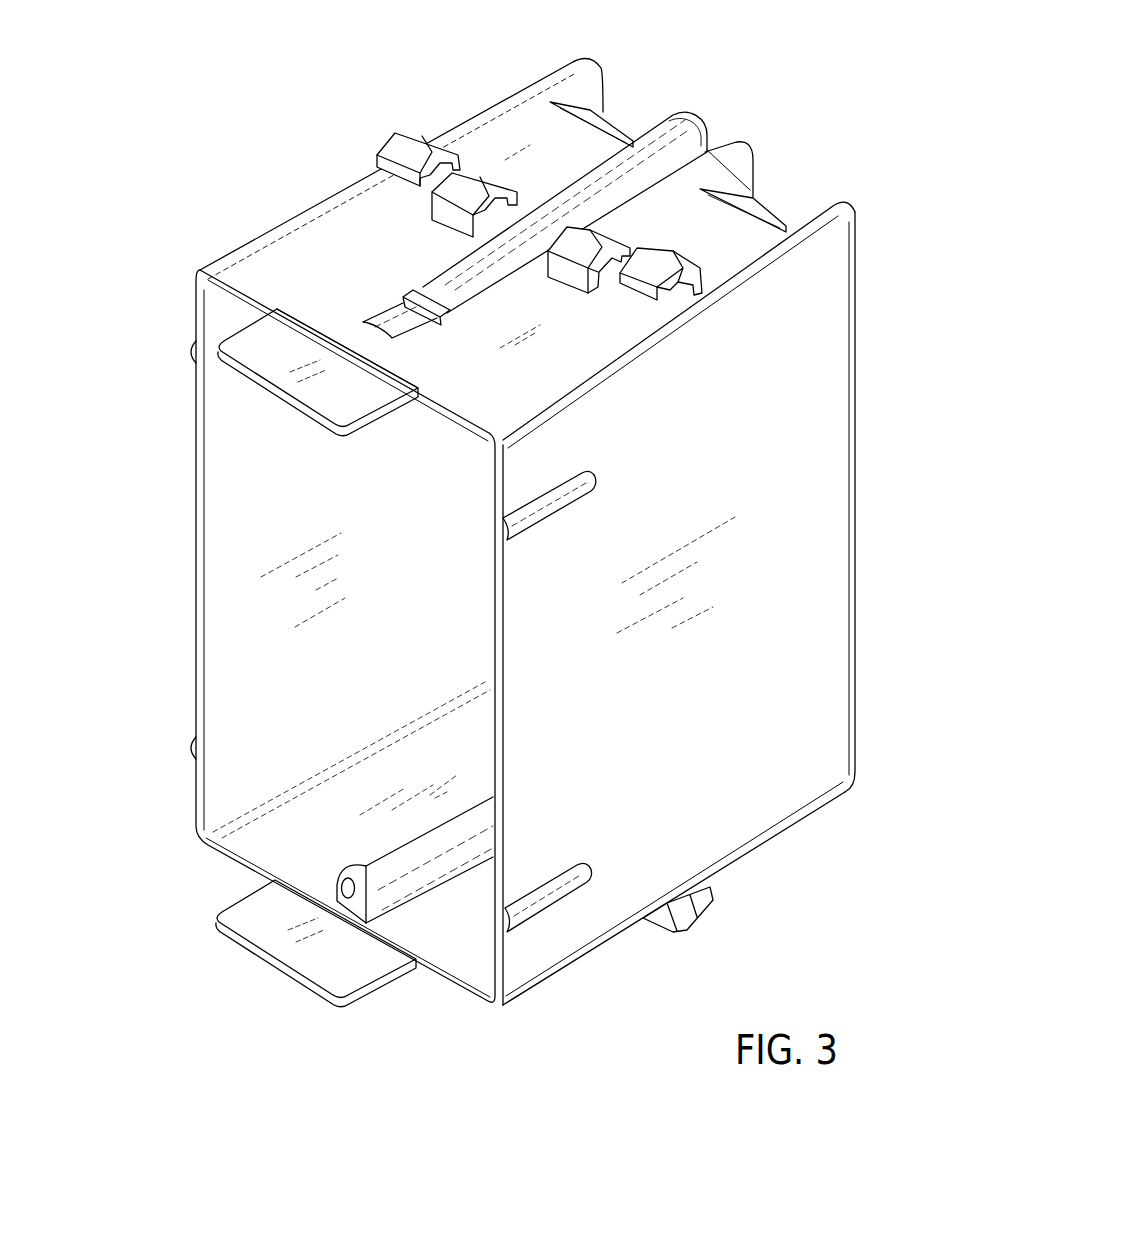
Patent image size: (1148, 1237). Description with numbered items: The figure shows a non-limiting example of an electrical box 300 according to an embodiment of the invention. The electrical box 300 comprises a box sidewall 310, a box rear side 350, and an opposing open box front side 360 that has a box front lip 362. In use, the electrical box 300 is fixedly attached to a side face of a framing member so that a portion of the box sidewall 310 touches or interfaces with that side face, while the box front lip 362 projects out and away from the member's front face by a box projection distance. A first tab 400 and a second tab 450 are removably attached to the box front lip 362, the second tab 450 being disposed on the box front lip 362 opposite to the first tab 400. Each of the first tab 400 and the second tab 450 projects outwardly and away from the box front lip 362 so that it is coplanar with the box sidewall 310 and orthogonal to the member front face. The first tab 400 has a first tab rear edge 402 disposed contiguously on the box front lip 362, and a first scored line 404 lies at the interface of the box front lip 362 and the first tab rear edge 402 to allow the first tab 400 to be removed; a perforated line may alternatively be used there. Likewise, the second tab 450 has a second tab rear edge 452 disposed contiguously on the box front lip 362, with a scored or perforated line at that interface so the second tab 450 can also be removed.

The electrical box 300 is at (499, 504).
The box sidewall 310 is at (705, 682).
The box rear side 350 is at (857, 262).
The open box front side 360 is at (223, 689).
The box front lip 362 is at (500, 837).
The first tab 400 is at (265, 345).
The first tab rear edge 402 is at (337, 340).
The first scored line 404 is at (318, 327).
The second tab 450 is at (263, 920).
The second tab rear edge 452 is at (373, 928).